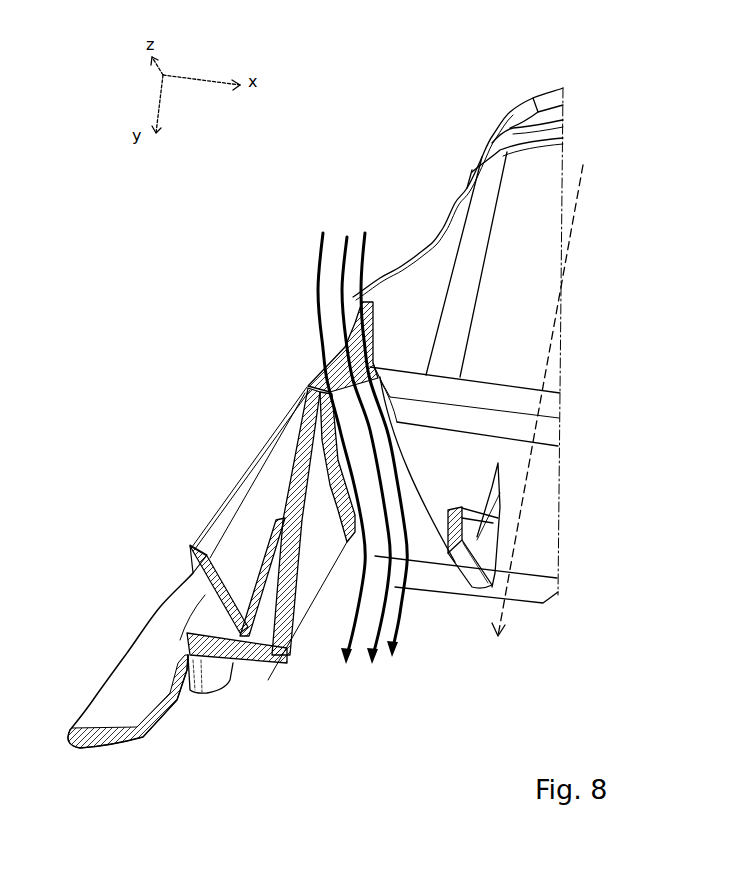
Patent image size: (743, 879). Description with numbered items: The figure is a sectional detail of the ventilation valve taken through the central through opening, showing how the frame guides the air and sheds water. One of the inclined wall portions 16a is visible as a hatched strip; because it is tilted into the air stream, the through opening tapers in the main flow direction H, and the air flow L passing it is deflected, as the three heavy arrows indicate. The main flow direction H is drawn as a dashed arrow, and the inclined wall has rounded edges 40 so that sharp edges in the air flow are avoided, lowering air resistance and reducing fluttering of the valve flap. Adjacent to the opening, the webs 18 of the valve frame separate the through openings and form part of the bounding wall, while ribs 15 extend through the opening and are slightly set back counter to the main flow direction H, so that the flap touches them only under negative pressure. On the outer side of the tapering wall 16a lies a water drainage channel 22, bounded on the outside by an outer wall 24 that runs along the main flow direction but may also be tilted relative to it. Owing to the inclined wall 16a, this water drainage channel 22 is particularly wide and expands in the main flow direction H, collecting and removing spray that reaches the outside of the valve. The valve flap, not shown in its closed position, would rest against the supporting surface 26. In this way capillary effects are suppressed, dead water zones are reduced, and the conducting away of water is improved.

The ribs 15 is at (500, 510).
The inclined wall portion 16a is at (333, 487).
The webs 18 is at (540, 595).
The water drainage channel 22 is at (313, 582).
The outer wall 24 is at (287, 537).
The supporting surface 26 is at (350, 545).
The rounded edges 40 is at (417, 548).
The main flow direction H is at (553, 400).
The air flow L is at (370, 448).